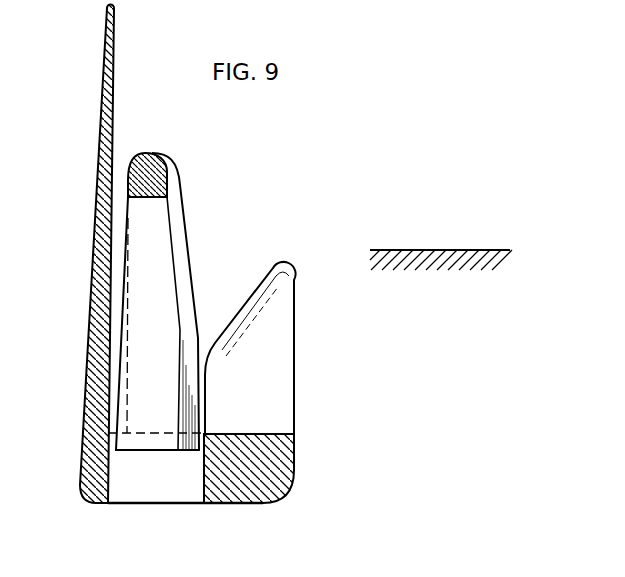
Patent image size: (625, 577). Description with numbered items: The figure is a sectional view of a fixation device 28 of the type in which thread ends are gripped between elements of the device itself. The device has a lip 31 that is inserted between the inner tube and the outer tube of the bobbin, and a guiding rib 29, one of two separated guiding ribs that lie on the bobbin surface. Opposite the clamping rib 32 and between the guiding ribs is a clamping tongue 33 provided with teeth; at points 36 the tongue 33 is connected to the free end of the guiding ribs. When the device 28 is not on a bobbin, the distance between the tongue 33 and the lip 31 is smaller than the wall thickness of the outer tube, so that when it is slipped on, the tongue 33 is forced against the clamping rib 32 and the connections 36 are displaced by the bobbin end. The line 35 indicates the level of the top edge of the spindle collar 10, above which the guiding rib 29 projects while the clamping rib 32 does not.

The collar 10 is at (290, 245).
The fixation device 28 is at (228, 250).
The guiding rib 29 is at (166, 170).
The lip 31 is at (113, 37).
The clamping rib 32 is at (279, 405).
The tongue 33 is at (143, 410).
The line 35 is at (400, 250).
The connections 36 is at (136, 162).